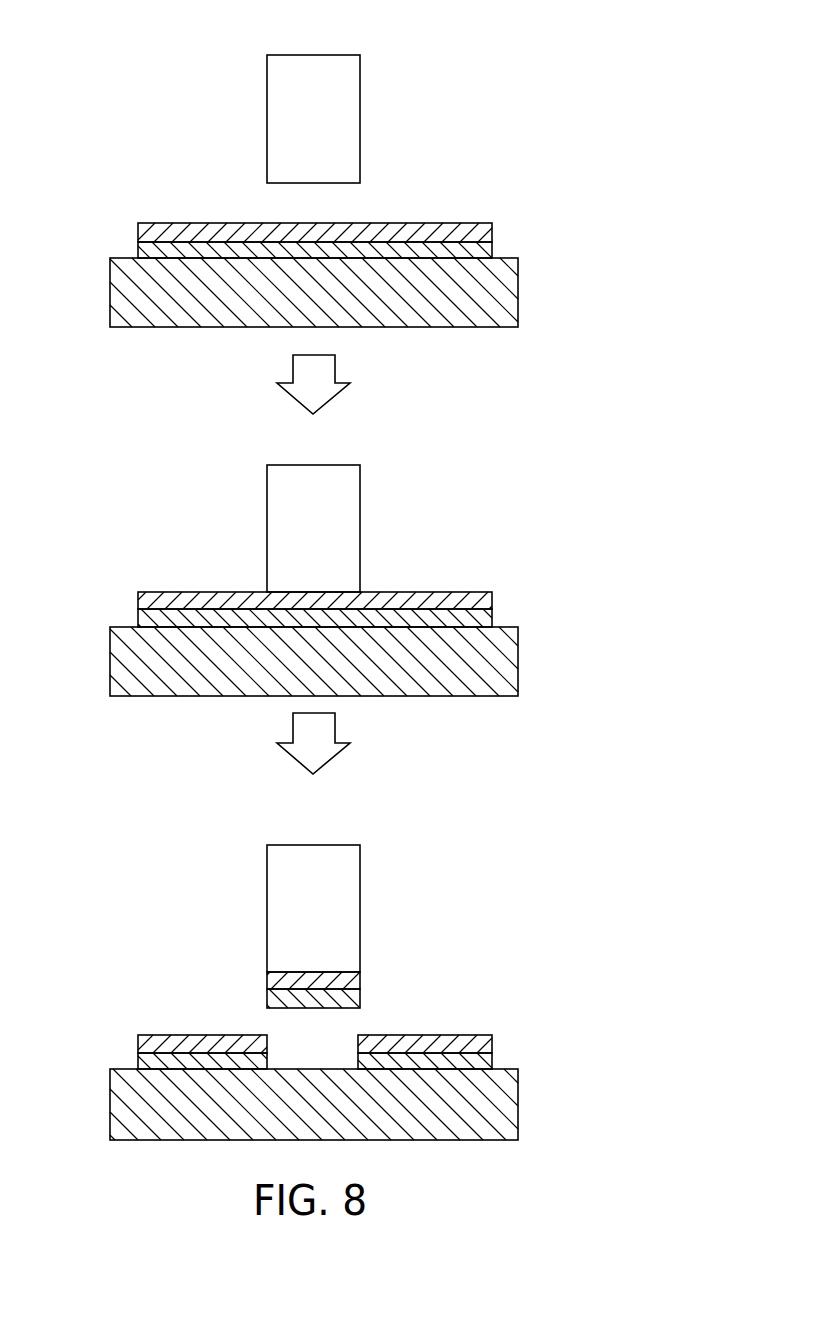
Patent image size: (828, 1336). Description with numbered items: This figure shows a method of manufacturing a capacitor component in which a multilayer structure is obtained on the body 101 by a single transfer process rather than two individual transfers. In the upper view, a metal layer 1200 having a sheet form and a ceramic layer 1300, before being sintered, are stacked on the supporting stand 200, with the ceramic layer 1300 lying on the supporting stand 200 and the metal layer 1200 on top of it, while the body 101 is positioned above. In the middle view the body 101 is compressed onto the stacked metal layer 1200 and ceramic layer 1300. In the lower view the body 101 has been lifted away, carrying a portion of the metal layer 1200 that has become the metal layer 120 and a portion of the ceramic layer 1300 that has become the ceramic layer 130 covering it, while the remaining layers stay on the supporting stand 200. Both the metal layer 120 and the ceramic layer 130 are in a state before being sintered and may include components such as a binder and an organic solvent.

The body 101 is at (360, 100).
The metal layer 1200 is at (492, 227).
The ceramic layer 1300 is at (492, 252).
The supporting stand 200 is at (518, 287).
The metal layer 120 is at (360, 975).
The ceramic layer 130 is at (360, 995).